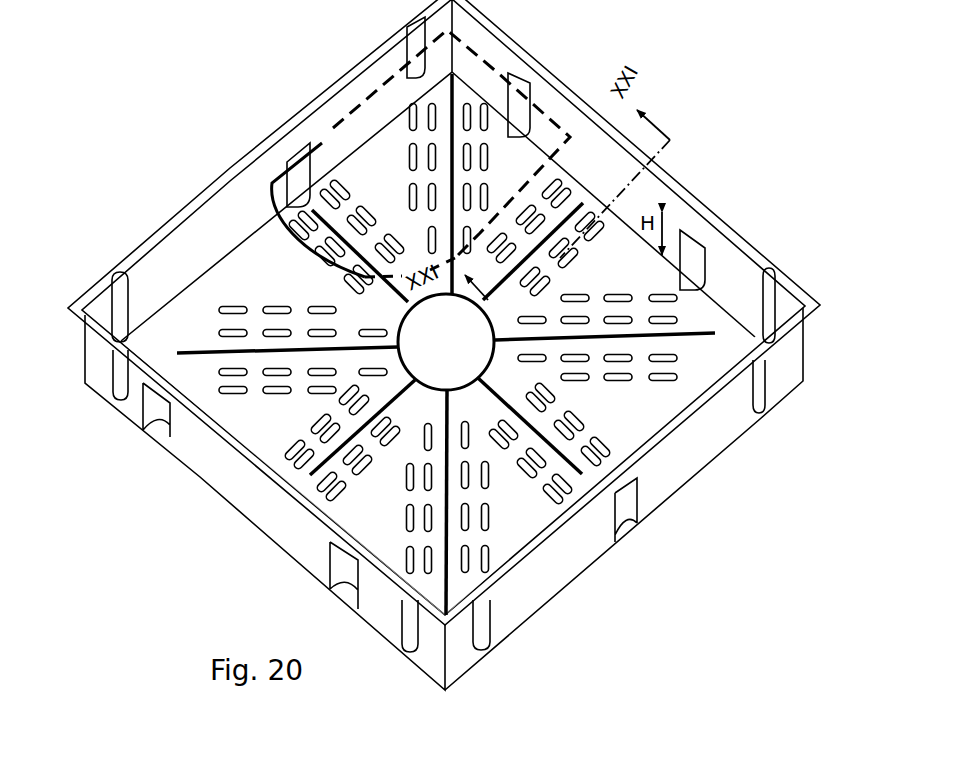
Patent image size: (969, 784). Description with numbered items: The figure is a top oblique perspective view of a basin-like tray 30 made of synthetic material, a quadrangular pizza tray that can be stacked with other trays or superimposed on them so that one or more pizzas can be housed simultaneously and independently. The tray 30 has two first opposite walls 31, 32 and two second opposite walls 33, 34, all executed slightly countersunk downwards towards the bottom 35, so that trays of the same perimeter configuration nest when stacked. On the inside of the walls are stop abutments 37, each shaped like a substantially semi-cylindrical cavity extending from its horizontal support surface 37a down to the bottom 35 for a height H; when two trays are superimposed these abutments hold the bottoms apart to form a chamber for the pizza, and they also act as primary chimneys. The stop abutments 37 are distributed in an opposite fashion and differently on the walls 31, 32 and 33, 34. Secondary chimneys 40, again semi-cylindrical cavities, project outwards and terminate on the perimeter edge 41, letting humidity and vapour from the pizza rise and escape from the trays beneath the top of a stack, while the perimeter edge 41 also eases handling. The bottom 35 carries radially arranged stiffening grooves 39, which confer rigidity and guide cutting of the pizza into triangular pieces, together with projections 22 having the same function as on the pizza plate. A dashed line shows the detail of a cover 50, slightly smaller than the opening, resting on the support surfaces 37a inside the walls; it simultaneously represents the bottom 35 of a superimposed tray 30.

The basin-like tray 30 is at (738, 133).
The first opposite wall 31 is at (290, 535).
The first opposite wall 32 is at (743, 277).
The second opposite wall 33 is at (200, 228).
The second opposite wall 34 is at (728, 437).
The bottom 35 is at (285, 294).
The stop abutment 37 is at (163, 435).
The horizontal support surface 37a is at (297, 157).
The stiffening groove 39 is at (213, 353).
The secondary chimney 40 is at (117, 373).
The perimeter edge 41 is at (133, 258).
The cover 50 is at (273, 187).
The projection 22 is at (405, 480).